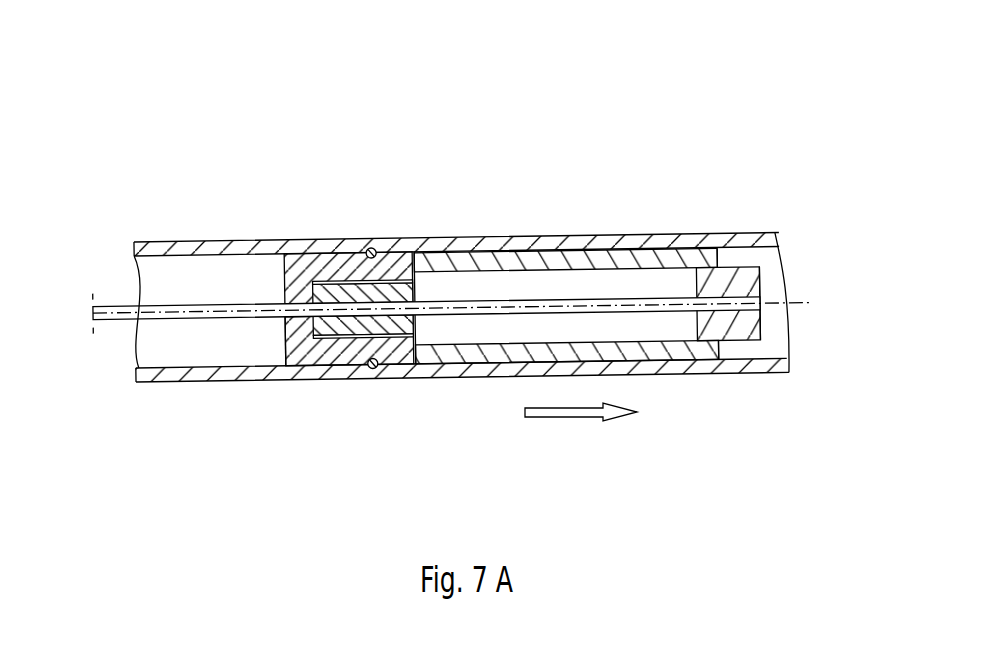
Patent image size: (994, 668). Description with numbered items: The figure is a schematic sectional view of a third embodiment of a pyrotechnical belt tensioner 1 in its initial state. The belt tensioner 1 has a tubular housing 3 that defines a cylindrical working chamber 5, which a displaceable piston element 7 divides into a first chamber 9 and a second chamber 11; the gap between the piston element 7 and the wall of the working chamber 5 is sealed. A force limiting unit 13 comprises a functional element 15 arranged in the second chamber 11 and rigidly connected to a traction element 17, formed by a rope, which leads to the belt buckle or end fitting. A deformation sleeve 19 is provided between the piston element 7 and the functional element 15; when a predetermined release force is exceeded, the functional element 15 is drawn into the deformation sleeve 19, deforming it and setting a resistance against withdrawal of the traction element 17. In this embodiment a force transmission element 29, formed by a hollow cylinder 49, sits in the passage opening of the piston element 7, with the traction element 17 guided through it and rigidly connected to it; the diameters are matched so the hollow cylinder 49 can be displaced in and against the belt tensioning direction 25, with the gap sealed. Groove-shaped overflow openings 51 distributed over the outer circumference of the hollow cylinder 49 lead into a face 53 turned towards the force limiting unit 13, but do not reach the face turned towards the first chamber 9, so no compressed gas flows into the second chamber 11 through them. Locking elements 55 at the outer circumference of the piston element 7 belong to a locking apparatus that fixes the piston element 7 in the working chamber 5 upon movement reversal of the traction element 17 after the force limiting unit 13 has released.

The belt tensioner 1 is at (463, 264).
The tubular housing 3 is at (189, 250).
The working chamber 5 is at (233, 262).
The piston element 7 is at (293, 258).
The first chamber 9 is at (156, 242).
The second chamber 11 is at (765, 256).
The force limiting unit 13 is at (632, 273).
The functional element 15 is at (758, 348).
The traction element 17 is at (128, 315).
The deformation sleeve 19 is at (508, 236).
The belt tensioning direction 25 is at (573, 412).
The force transmission element 29 is at (282, 342).
The hollow cylinder 49 is at (398, 282).
The overflow openings 51 is at (334, 256).
The face 53 is at (418, 340).
The locking elements 55 is at (371, 250).